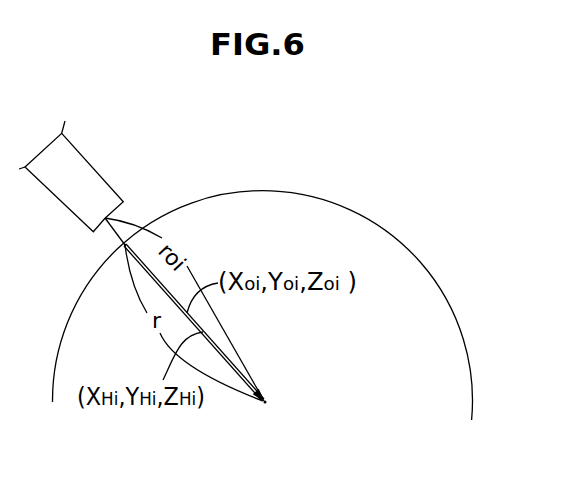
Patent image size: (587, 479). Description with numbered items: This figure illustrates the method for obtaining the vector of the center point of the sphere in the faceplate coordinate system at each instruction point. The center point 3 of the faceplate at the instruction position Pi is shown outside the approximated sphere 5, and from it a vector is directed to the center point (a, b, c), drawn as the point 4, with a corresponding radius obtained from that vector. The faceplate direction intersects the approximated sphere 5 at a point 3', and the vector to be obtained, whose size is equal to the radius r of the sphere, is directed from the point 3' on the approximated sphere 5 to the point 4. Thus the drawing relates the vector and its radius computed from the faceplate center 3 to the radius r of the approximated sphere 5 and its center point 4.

The center point of the faceplate 3 is at (96, 176).
The point on the approximated sphere 3' is at (80, 253).
The point 4 is at (239, 340).
The approximated sphere 5 is at (472, 380).